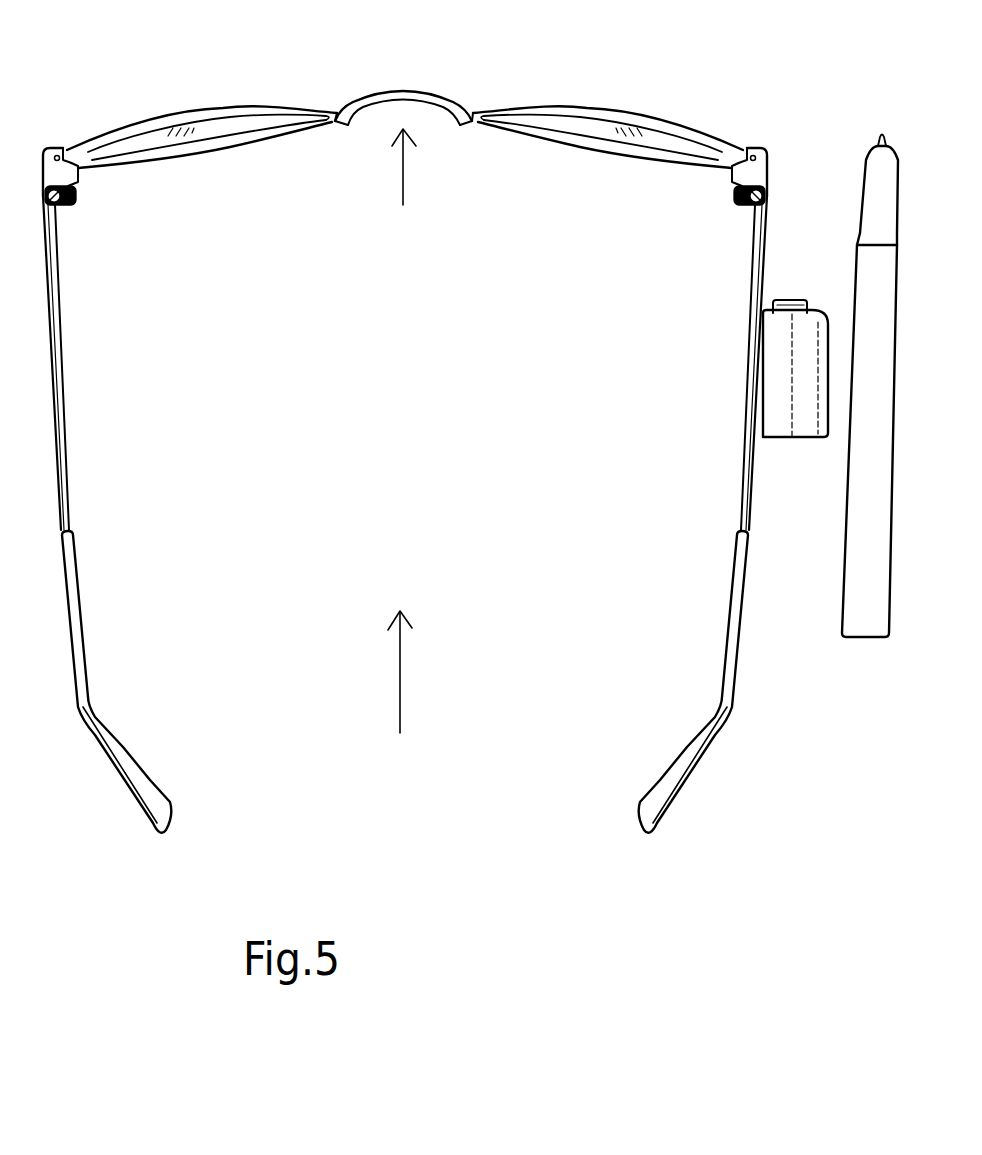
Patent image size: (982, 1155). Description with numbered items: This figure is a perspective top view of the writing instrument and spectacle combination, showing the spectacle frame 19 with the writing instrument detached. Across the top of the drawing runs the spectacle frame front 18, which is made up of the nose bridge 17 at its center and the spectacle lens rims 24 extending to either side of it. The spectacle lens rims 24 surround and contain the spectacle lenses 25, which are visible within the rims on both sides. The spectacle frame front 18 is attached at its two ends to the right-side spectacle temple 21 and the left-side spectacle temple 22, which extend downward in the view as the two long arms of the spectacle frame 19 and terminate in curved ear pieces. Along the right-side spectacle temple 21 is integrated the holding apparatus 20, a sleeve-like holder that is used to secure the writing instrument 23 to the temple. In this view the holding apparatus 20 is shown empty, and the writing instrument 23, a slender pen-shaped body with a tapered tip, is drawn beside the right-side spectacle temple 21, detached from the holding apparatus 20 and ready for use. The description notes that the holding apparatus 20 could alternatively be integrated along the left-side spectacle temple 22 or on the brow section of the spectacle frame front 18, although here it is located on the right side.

The nose bridge 17 is at (378, 90).
The spectacle frame front 18 is at (403, 183).
The spectacle frame 19 is at (400, 688).
The holding apparatus 20 is at (788, 302).
The right-side spectacle temple 21 is at (757, 298).
The left-side spectacle temple 22 is at (55, 335).
The writing instrument 23 is at (870, 630).
The spectacle lens rims 24 is at (160, 150).
The spectacle lenses 25 is at (230, 123).